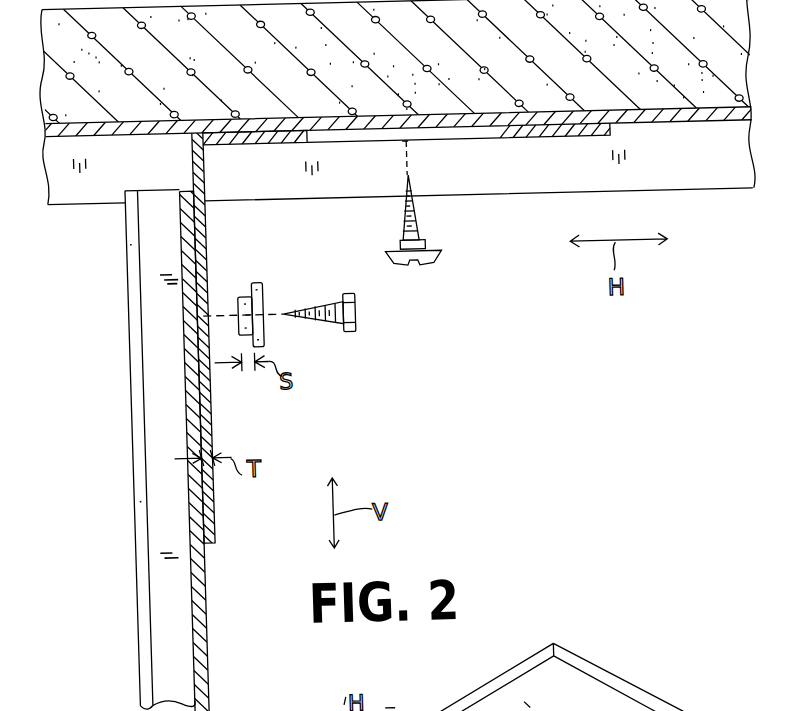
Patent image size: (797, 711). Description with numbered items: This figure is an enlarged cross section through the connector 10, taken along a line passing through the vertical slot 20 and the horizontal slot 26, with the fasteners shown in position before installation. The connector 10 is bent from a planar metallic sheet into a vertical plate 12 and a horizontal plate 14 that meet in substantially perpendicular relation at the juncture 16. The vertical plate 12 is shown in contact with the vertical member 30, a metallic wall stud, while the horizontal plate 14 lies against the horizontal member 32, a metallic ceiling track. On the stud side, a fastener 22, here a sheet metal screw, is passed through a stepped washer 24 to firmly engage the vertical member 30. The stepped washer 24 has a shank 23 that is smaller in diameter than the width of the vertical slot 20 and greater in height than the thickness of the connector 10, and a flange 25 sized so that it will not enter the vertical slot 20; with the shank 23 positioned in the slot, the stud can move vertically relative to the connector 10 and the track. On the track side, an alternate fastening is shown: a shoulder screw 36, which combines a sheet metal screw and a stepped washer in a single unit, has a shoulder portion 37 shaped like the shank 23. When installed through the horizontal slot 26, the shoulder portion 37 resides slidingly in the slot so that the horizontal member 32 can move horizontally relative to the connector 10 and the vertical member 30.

The connector 10 is at (339, 421).
The vertical plate 12 is at (204, 505).
The horizontal plate 14 is at (573, 147).
The juncture 16 is at (203, 146).
The vertical slot 20 is at (197, 412).
The fastener 22 is at (349, 333).
The shank 23 is at (238, 298).
The stepped washer 24 is at (259, 297).
The flange 25 is at (252, 284).
The horizontal slot 26 is at (482, 146).
The vertical member 30 is at (192, 623).
The horizontal member 32 is at (694, 186).
The shoulder screw 36 is at (434, 267).
The shoulder portion 37 is at (425, 249).